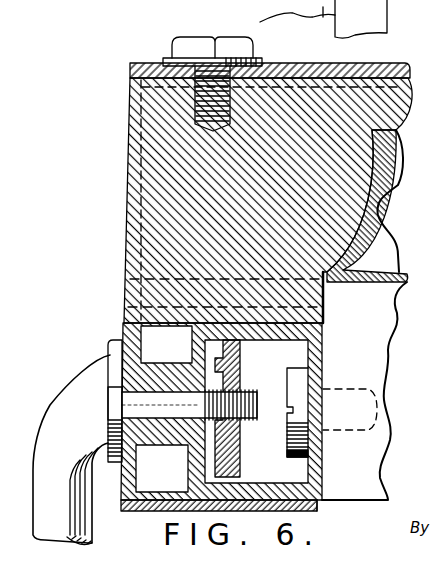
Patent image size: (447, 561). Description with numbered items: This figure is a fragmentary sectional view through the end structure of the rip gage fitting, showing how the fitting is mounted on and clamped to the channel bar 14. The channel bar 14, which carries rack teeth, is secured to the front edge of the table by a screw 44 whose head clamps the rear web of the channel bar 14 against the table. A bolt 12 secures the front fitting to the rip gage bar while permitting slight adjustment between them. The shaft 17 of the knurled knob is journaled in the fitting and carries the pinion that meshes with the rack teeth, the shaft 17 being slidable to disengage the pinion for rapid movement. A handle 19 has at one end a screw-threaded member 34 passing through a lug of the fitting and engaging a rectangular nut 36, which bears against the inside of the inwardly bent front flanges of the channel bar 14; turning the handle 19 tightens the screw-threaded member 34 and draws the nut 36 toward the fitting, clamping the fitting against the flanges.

The bolt 12 is at (192, 42).
The channel bar 14 is at (261, 312).
The shaft 17 is at (187, 300).
The handle 19 is at (62, 412).
The screw-threaded member 34 is at (254, 421).
The nut 36 is at (240, 362).
The screw 44 is at (288, 448).